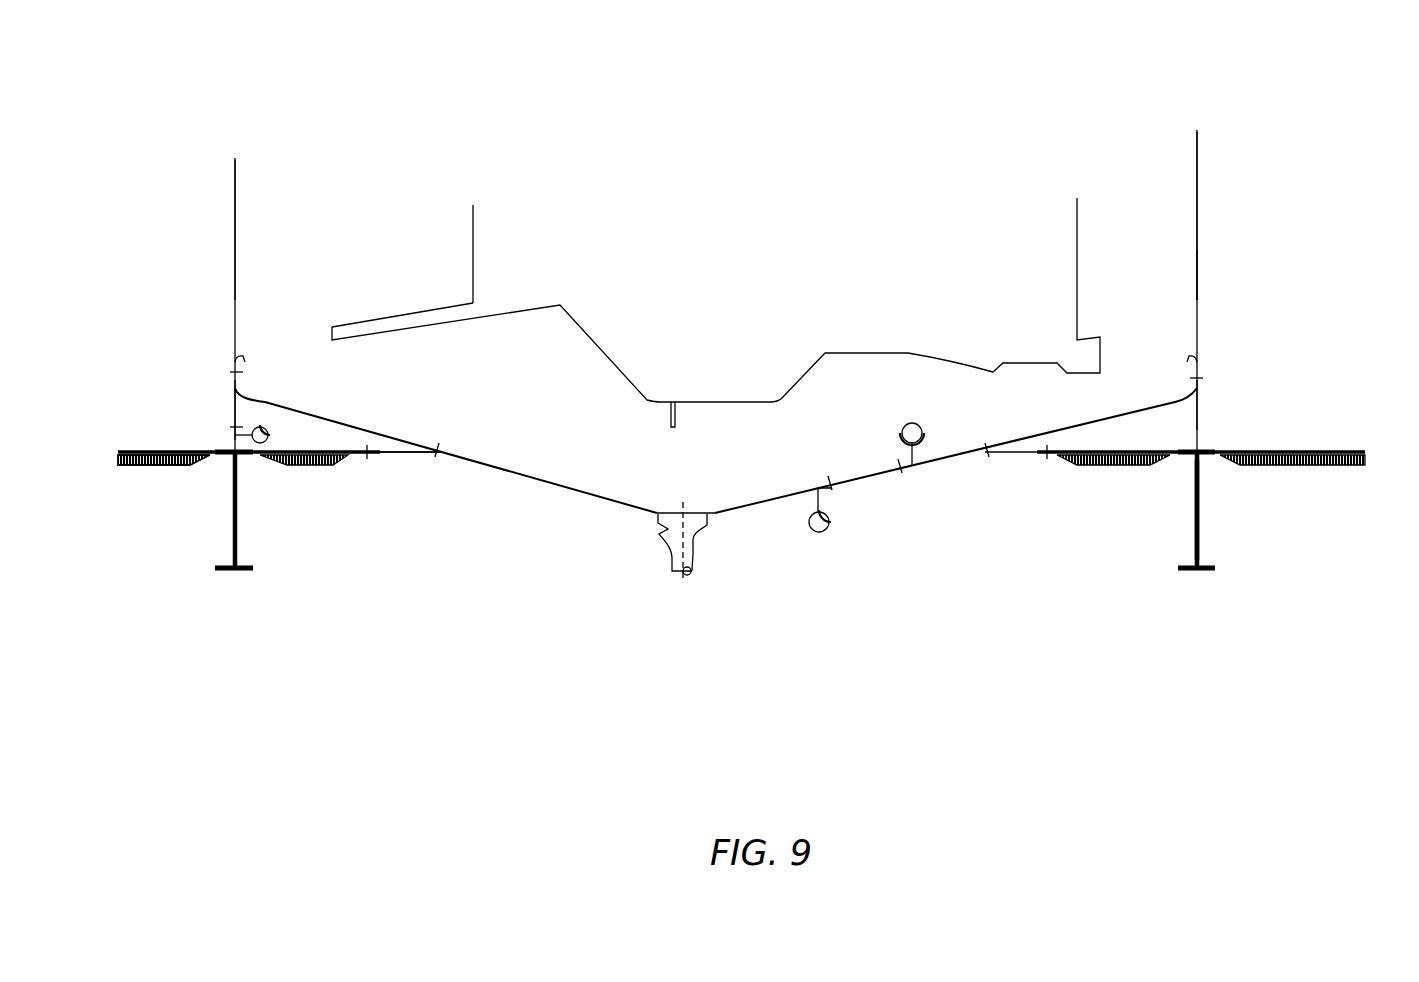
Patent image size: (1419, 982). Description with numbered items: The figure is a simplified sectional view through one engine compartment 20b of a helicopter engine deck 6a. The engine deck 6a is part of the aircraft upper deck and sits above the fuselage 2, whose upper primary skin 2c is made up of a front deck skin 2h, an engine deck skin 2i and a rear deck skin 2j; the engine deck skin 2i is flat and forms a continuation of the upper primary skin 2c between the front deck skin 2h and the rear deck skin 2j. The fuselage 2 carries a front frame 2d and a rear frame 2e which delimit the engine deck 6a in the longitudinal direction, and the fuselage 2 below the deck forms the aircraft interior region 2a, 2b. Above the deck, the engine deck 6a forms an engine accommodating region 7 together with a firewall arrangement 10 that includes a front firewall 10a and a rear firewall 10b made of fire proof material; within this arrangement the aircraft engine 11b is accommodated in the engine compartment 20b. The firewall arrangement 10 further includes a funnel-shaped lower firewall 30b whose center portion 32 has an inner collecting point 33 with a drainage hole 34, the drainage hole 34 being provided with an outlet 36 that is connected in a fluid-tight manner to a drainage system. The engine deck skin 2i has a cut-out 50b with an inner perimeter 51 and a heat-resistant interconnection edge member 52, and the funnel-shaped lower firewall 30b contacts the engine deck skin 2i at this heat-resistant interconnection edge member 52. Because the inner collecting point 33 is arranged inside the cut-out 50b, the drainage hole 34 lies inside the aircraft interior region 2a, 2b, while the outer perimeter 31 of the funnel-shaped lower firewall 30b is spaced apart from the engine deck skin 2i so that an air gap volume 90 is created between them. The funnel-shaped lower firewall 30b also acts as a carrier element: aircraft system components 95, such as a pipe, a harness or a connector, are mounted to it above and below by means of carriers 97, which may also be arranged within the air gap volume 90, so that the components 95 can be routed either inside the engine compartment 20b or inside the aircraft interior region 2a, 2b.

The fuselage 2 is at (1312, 441).
The aircraft interior region 2a is at (1116, 528).
The aircraft interior region 2b is at (1208, 536).
The upper primary skin 2c is at (155, 449).
The front frame 2d is at (235, 533).
The rear frame 2e is at (1197, 533).
The front deck skin 2h is at (148, 468).
The engine deck skin 2i is at (313, 468).
The rear deck skin 2j is at (1330, 468).
The engine deck 6a is at (1219, 275).
The engine accommodating region 7 is at (356, 113).
The firewall arrangement 10 is at (216, 168).
The front firewall 10a is at (235, 203).
The rear firewall 10b is at (1197, 203).
The aircraft engine 11b is at (473, 222).
The engine compartment 20b is at (1160, 130).
The funnel-shaped lower firewall 30b is at (921, 466).
The outer perimeter 31 is at (259, 385).
The center portion 32 is at (575, 492).
The inner collecting point 33 is at (689, 510).
The drainage hole 34 is at (658, 532).
The outlet 36 is at (694, 557).
The cut-out 50b is at (974, 459).
The inner perimeter 51 is at (445, 466).
The heat-resistant interconnection edge member 52 is at (437, 460).
The air gap volume 90 is at (257, 415).
The aircraft system component 95 is at (266, 430).
The carrier 97 is at (233, 441).